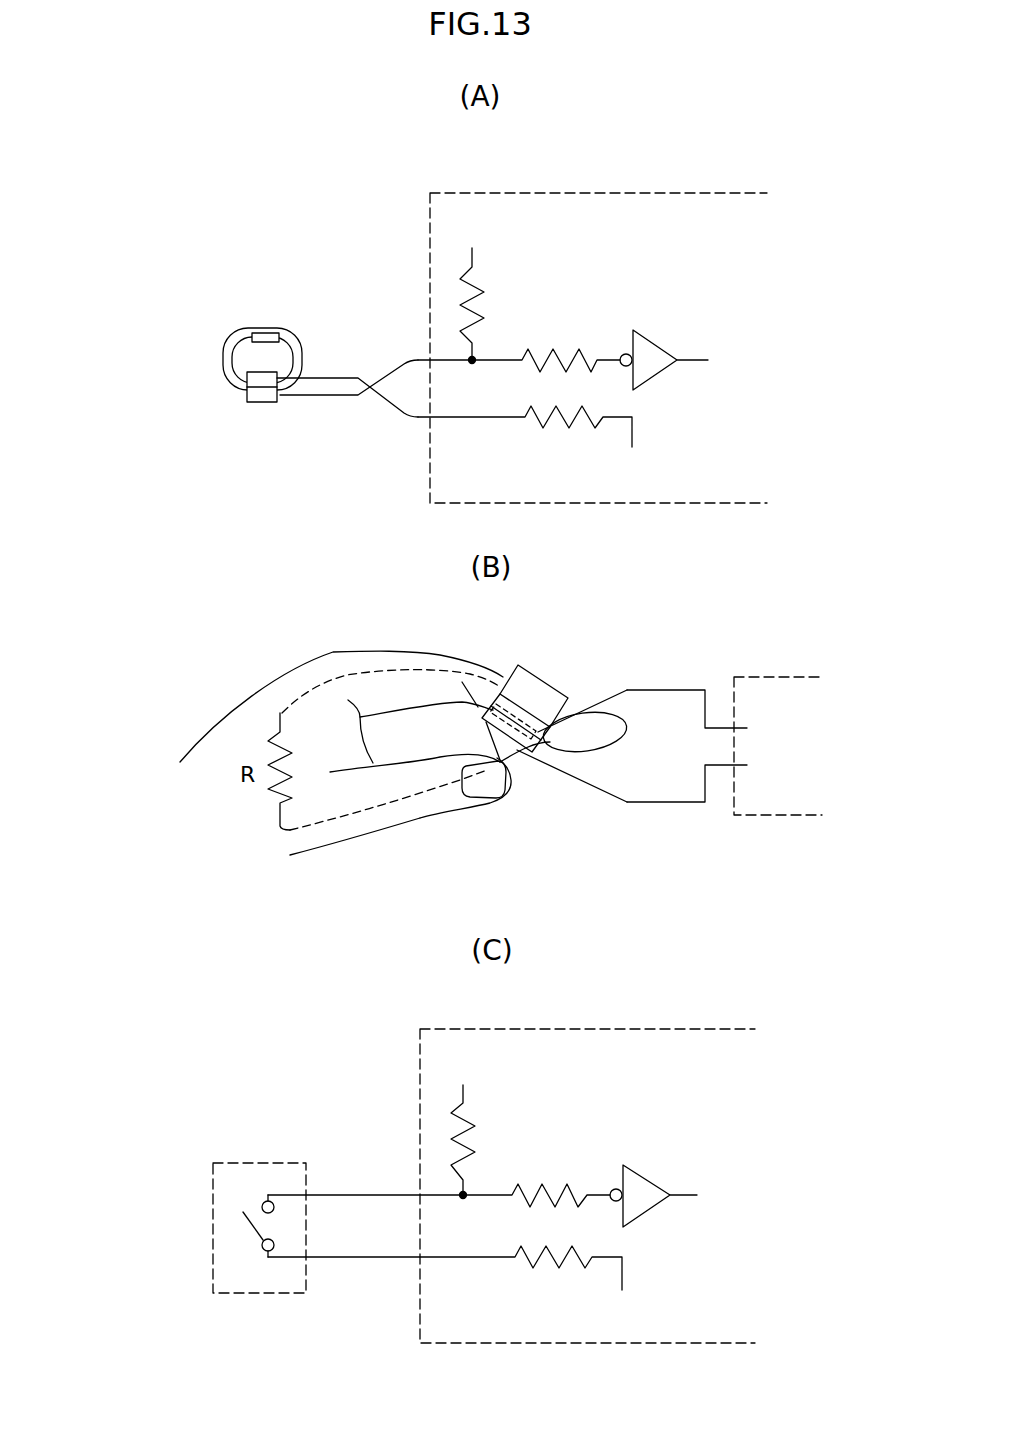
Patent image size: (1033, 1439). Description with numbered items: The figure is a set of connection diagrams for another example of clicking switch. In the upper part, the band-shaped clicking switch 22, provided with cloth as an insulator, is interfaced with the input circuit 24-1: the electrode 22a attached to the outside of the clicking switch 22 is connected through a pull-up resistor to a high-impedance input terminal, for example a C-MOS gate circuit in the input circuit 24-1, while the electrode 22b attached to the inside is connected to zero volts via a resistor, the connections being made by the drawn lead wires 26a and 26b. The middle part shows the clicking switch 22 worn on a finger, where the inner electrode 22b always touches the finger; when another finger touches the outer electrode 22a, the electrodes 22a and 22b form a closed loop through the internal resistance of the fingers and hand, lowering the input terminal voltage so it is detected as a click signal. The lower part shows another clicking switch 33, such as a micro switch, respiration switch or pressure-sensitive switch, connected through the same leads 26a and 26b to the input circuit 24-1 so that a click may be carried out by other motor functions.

The clicking switch 22 is at (262, 330).
The electrode 22a is at (256, 398).
The electrode 22b is at (260, 378).
The lead wire 26a is at (332, 395).
The lead wire 26b is at (333, 378).
The input circuit 24-1 is at (585, 212).
The clicking switch 33 is at (232, 1182).